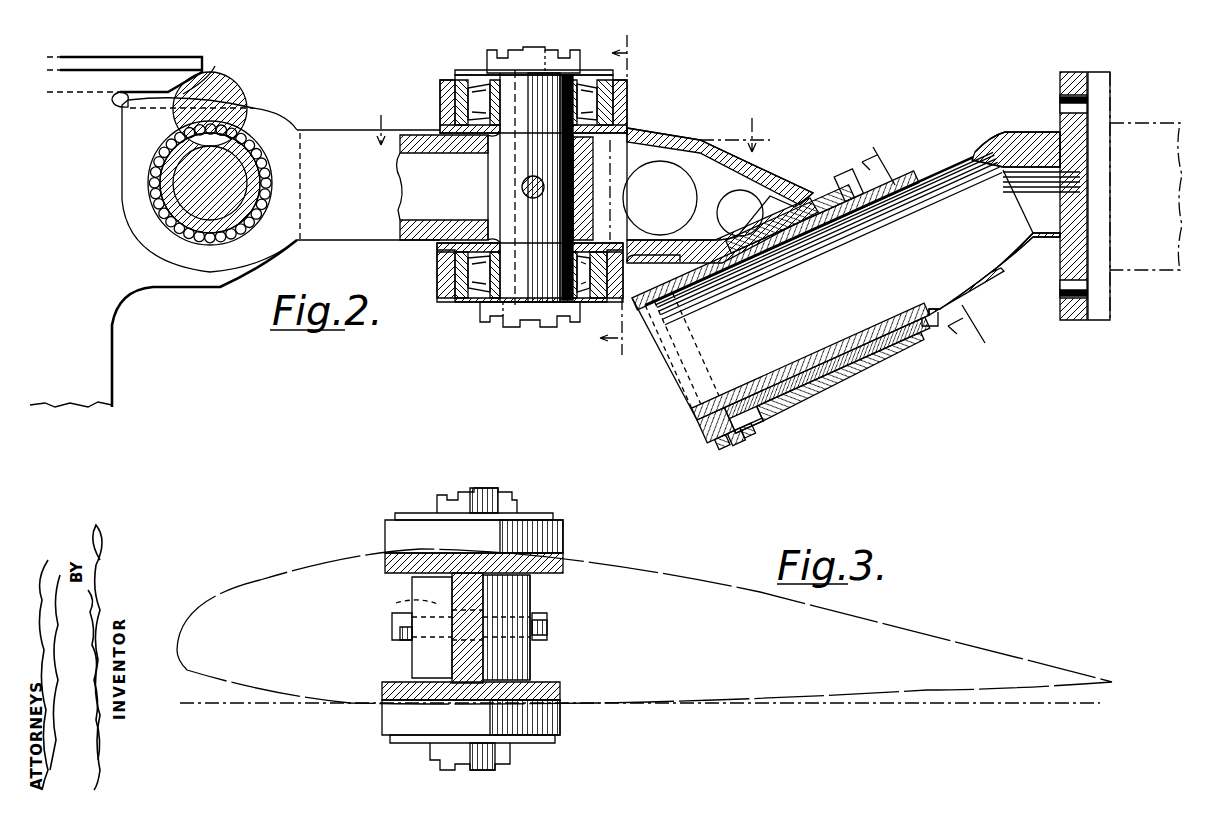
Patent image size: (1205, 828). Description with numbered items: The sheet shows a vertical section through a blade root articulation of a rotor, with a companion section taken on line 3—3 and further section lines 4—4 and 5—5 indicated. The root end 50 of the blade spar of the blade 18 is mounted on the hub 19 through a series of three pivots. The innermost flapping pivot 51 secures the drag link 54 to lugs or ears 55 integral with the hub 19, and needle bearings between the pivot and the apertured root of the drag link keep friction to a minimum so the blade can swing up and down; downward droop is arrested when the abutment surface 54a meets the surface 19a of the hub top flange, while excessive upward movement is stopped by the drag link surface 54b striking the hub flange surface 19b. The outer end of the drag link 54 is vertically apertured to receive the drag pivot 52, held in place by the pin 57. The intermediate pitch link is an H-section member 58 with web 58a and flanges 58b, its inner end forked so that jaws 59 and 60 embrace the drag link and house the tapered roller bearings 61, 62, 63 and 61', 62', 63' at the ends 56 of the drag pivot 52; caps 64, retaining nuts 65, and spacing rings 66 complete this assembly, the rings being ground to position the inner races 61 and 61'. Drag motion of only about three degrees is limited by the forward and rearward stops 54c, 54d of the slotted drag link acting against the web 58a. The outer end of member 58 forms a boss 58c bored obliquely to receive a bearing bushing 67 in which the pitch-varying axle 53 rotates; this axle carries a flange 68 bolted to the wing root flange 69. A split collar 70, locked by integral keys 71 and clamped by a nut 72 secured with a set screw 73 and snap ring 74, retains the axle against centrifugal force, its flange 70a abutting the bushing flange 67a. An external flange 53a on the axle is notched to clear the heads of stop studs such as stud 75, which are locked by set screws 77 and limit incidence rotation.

In FIG. 3, the blade 18 is at (265, 577).
In FIG. 2, the hub 19 is at (92, 353).
In FIG. 2, the surface of the top flange of the hub 19a is at (142, 92).
In FIG. 2, the surface of the hub flange 19b is at (215, 66).
In FIG. 2, the root end of the blade spar 50 is at (1138, 123).
In FIG. 2, the flapping pivot 51 is at (258, 180).
In FIG. 2, the drag pivot 52 is at (497, 174).
In FIG. 2, the pitch-varying pin or axle 53 is at (950, 290).
In FIG. 2, the external flange 53a is at (933, 327).
In FIG. 2, the drag link 54 is at (305, 186).
In FIG. 3, the drag link 54 is at (548, 648).
In FIG. 2, the abutment or surface of the drag link 54a is at (118, 108).
In FIG. 2, the drag link surface 54b is at (196, 98).
In FIG. 3, the forward stop 54c is at (448, 650).
In FIG. 3, the rearward stop 54d is at (533, 665).
In FIG. 2, the lugs or ears 55 is at (283, 118).
In FIG. 2, the ends of the drag pivot 56 is at (538, 78).
In FIG. 2, the pin 57 is at (522, 190).
In FIG. 3, the pin 57 is at (396, 610).
In FIG. 2, the arm or member 58 is at (770, 170).
In FIG. 2, the web 58a is at (622, 196).
In FIG. 3, the web 58a is at (533, 592).
In FIG. 2, the flanges 58b is at (680, 136).
In FIG. 3, the flanges 58b is at (385, 572).
In FIG. 2, the boss 58c is at (880, 360).
In FIG. 2, the jaw of the fork 59 is at (628, 88).
In FIG. 3, the jaw of the fork 59 is at (565, 533).
In FIG. 2, the jaw of the fork 60 is at (622, 274).
In FIG. 3, the jaw of the fork 60 is at (383, 717).
In FIG. 2, the inner roller race 61 is at (522, 72).
In FIG. 2, the inner roller race 61' is at (501, 297).
In FIG. 2, the tapered roller bearing element 62 is at (509, 93).
In FIG. 2, the tapered roller bearing element 62' is at (504, 275).
In FIG. 2, the tapered roller bearing element 63 is at (498, 102).
In FIG. 2, the tapered roller bearing element 63' is at (490, 269).
In FIG. 2, the caps or covers 64 is at (585, 70).
In FIG. 3, the caps or covers 64 is at (548, 512).
In FIG. 2, the retaining nuts 65 is at (528, 48).
In FIG. 3, the retaining nuts 65 is at (505, 490).
In FIG. 2, the spacing rings 66 is at (494, 137).
In FIG. 2, the bearing bushing 67 is at (855, 370).
In FIG. 2, the flange of the bearing bushing 67a is at (775, 425).
In FIG. 2, the flange 68 is at (1070, 322).
In FIG. 2, the wing root flange 69 is at (1100, 322).
In FIG. 2, the split collar 70 is at (696, 436).
In FIG. 2, the flange of the split collar 70a is at (752, 435).
In FIG. 2, the keys 71 is at (700, 310).
In FIG. 2, the nut 72 is at (708, 455).
In FIG. 2, the set screw 73 is at (738, 445).
In FIG. 2, the snap ring 74 is at (724, 458).
In FIG. 2, the stud 75 is at (805, 200).
In FIG. 2, the set screws 77 is at (825, 200).
In FIG. 2, the section line 3— 3 is at (621, 198).
In FIG. 2, the section line 4— 4 is at (923, 245).
In FIG. 2, the section line 5— 5 is at (570, 132).